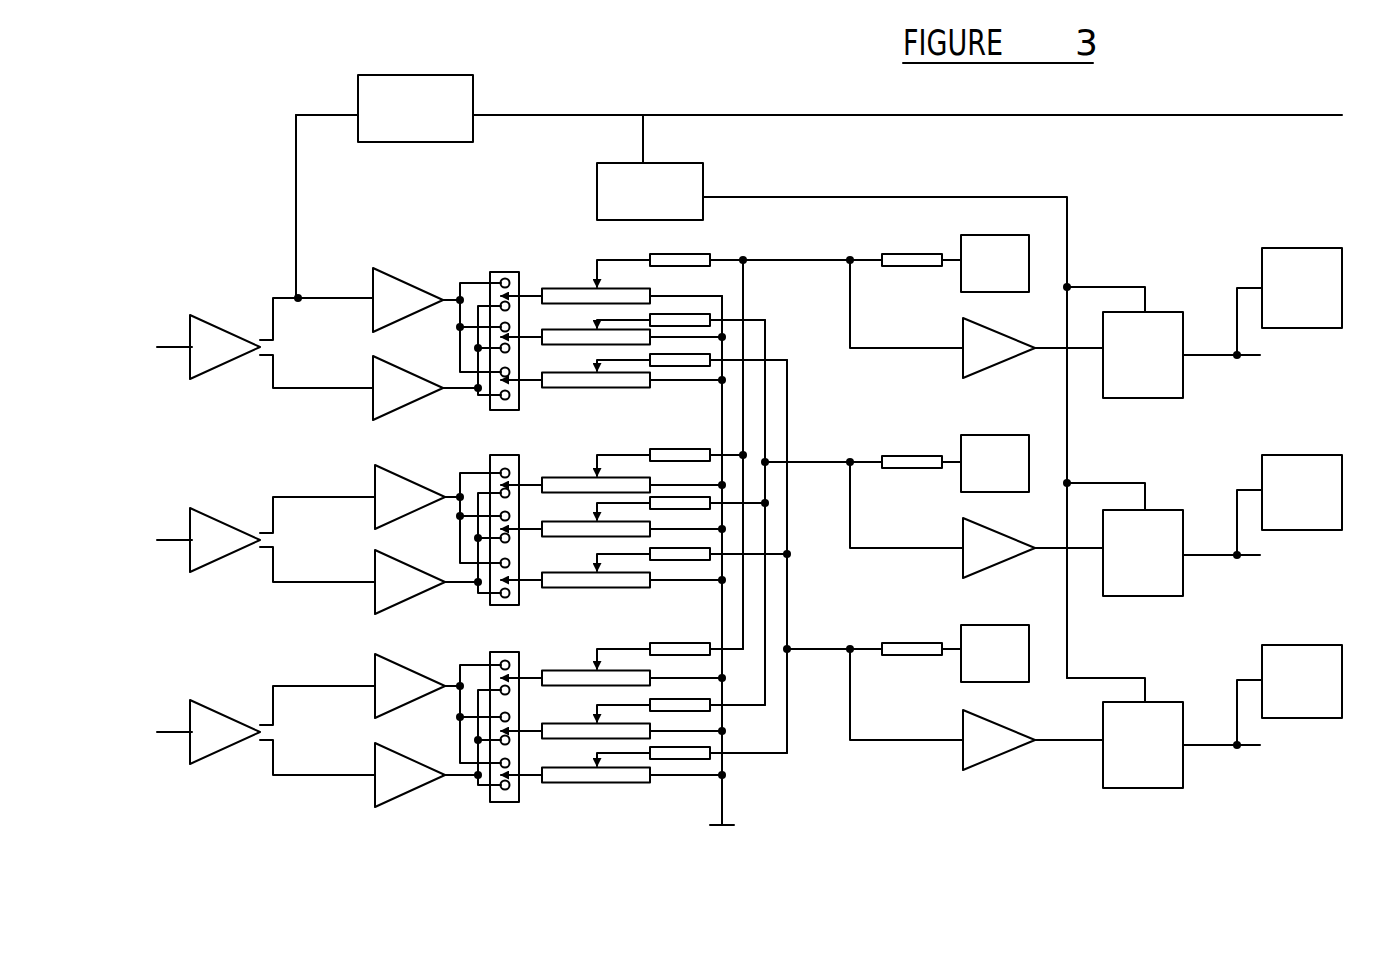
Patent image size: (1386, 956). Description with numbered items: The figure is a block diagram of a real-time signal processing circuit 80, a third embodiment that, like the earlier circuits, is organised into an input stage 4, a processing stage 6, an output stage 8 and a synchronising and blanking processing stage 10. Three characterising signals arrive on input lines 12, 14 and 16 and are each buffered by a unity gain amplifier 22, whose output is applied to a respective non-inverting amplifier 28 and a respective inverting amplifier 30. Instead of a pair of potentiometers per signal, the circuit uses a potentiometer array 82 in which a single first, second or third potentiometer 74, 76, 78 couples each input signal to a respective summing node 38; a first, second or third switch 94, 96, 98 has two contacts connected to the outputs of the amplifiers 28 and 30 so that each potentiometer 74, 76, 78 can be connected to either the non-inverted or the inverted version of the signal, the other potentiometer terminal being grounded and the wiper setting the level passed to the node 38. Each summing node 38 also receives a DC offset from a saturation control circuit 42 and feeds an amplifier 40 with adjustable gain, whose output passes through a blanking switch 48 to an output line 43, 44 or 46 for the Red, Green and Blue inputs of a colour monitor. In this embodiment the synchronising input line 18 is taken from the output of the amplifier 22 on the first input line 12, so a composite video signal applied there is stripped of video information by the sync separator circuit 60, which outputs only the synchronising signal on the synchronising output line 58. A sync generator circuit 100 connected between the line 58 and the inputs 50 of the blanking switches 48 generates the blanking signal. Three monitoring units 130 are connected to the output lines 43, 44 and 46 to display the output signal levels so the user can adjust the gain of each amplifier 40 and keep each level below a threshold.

The input stage 4 is at (283, 797).
The processing stage 6 is at (828, 818).
The output stage 8 is at (1152, 822).
The synchronising and blanking processing stage 10 is at (705, 98).
The first input line 12 is at (170, 358).
The second input line 14 is at (173, 548).
The third input line 16 is at (172, 740).
The synchronising input line 18 is at (296, 178).
The unity gain amplifier 22 is at (210, 350).
The non-inverting amplifier 28 is at (395, 285).
The inverting amplifier 30 is at (392, 390).
The summing node 38 is at (850, 252).
The unity gain amplifier 40 is at (990, 345).
The saturation control circuit 42 is at (982, 247).
The output line 43 is at (1228, 364).
The output line 44 is at (1233, 565).
The output line 46 is at (1234, 757).
The blanking switch 48 is at (1168, 320).
The blanking switch input 50 is at (1112, 283).
The synchronising output line 58 is at (1160, 122).
The sync separator circuit 60 is at (400, 78).
The first potentiometer 74 is at (562, 290).
The second potentiometer 76 is at (558, 340).
The third potentiometer 78 is at (560, 385).
The real-time signal processing circuit 80 is at (1268, 103).
The potentiometer array 82 is at (515, 823).
The first switch 94 is at (505, 270).
The second switch 96 is at (512, 320).
The third switch 98 is at (513, 359).
The sync generator circuit 100 is at (695, 180).
The monitoring unit 130 is at (1310, 328).